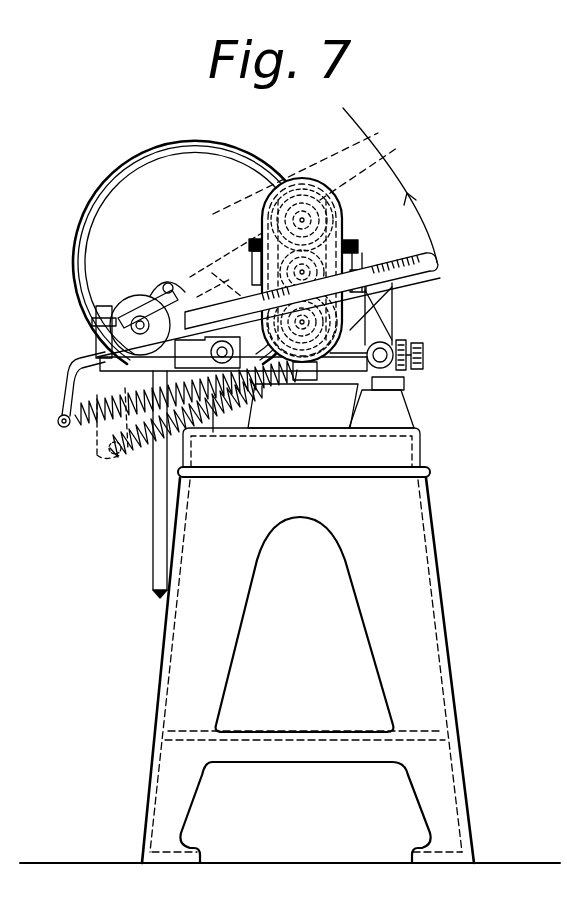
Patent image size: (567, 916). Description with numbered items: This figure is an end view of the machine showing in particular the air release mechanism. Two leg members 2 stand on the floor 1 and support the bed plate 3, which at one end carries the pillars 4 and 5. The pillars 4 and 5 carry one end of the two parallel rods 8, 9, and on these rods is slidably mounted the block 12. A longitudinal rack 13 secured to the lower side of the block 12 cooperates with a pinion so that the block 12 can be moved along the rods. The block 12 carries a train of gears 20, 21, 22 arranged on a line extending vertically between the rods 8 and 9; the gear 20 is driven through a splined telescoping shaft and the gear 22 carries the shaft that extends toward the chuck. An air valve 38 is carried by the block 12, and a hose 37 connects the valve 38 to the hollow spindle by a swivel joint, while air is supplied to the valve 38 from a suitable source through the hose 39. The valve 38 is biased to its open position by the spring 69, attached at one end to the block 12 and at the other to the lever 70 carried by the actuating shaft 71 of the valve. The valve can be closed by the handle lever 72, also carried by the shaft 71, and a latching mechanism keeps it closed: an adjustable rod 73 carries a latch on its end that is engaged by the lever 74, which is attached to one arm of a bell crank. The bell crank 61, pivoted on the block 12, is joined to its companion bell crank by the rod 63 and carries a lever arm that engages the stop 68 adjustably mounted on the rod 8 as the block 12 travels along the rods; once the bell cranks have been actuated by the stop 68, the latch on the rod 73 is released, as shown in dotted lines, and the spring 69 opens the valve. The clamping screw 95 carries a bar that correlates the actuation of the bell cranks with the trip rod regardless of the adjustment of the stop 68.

The floor 1 is at (86, 860).
The leg members 2 is at (410, 574).
The bed plate 3 is at (329, 434).
The pillar 4 is at (393, 406).
The pillar 5 is at (240, 409).
The rod 8 is at (381, 353).
The rod 9 is at (226, 350).
The block 12 is at (352, 330).
The longitudinal rack 13 is at (305, 380).
The gear 20 is at (318, 357).
The gear 21 is at (260, 278).
The gear 22 is at (318, 213).
The hose 37 is at (82, 228).
The air valve 38 is at (134, 300).
The hose 39 is at (162, 476).
The bell crank 61 is at (356, 260).
The rod 63 is at (343, 230).
The stop 68 is at (440, 278).
The spring 69 is at (64, 427).
The lever 70 is at (77, 378).
The actuating shaft 71 is at (103, 333).
The handle lever 72 is at (337, 107).
The adjustable rod 73 is at (210, 268).
The lever 74 is at (256, 262).
The clamping screw 95 is at (420, 359).